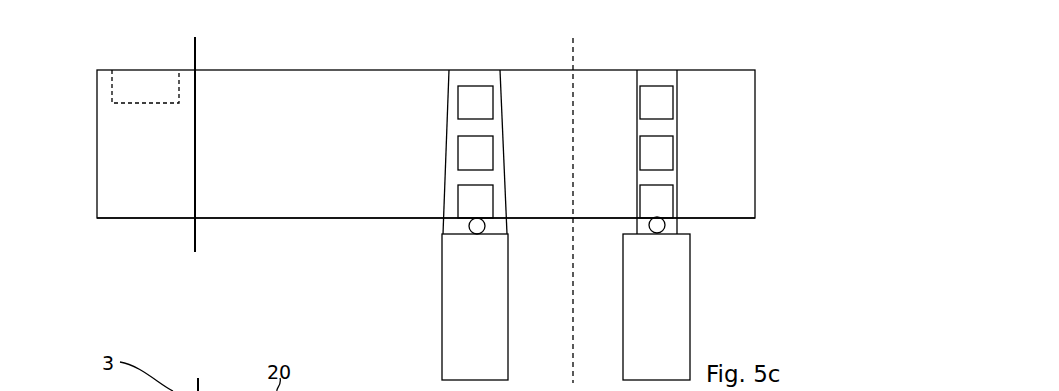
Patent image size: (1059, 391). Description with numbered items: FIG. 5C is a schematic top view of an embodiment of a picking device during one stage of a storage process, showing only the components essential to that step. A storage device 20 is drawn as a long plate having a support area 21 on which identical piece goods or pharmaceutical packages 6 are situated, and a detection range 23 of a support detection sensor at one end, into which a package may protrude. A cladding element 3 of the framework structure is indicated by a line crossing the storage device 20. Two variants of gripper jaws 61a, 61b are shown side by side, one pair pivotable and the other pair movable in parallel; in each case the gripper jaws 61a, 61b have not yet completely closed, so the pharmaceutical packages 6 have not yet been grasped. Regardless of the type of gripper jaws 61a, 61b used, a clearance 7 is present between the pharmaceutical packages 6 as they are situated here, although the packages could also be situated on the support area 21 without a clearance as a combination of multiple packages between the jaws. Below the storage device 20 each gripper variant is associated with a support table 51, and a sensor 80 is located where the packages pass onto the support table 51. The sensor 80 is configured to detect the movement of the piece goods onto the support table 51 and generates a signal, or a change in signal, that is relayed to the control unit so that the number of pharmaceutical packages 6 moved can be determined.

The cladding element 3 is at (193, 52).
The storage device 20 is at (228, 103).
The support area 21 is at (112, 202).
The detection range 23 is at (128, 87).
The pharmaceutical package 6 is at (475, 103).
The clearance 7 is at (475, 177).
The gripper jaw 61a is at (503, 138).
The gripper jaw 61b is at (448, 130).
The sensor 80 is at (467, 226).
The support table 51 is at (458, 283).